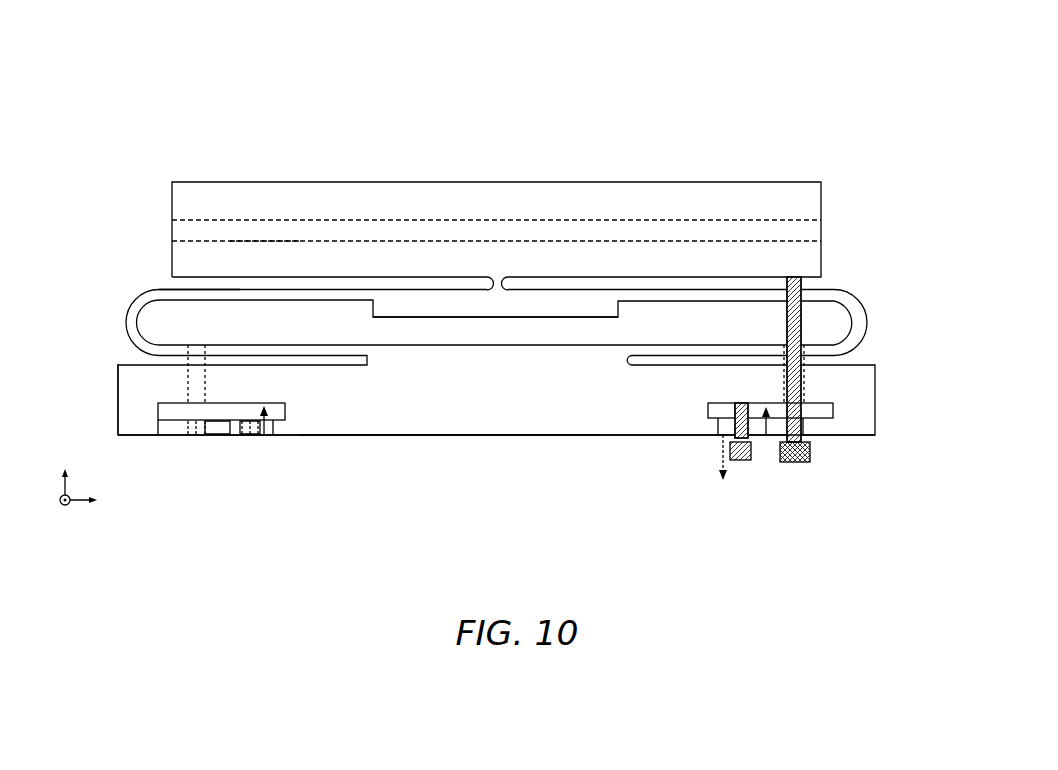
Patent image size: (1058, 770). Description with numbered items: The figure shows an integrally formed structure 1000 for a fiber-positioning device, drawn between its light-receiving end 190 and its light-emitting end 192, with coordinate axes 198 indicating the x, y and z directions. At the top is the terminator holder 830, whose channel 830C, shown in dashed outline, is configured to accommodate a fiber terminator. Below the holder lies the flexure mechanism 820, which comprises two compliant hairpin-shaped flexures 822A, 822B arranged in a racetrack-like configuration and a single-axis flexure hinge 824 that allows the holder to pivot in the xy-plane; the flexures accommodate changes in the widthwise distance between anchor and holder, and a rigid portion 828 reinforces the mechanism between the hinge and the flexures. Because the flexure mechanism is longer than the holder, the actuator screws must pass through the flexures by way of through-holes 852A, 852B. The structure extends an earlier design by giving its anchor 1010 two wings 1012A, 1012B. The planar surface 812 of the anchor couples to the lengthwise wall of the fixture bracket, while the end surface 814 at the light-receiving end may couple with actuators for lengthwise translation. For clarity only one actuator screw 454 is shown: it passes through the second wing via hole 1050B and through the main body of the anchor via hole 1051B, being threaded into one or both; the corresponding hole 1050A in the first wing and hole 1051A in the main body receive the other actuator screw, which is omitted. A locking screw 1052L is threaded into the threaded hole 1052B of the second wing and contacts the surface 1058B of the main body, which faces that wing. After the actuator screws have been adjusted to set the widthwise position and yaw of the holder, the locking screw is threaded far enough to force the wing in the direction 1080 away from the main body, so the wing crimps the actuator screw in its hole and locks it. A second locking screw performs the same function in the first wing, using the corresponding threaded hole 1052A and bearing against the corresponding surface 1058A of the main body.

The integrally formed structure 1000 is at (148, 52).
The light-receiving end 190 is at (68, 214).
The light-emitting end 192 is at (881, 216).
The coordinate system 198 is at (66, 523).
The terminator holder 830 is at (482, 206).
The channel 830C is at (285, 220).
The single-axis flexure hinge 824 is at (490, 284).
The rigid portion 828 is at (620, 310).
The flexure mechanism 820 is at (98, 332).
The compliant hairpin-shaped flexure 822A is at (125, 322).
The compliant hairpin-shaped flexure 822B is at (868, 321).
The through-hole 852A is at (197, 290).
The through-hole 852B is at (834, 289).
The actuator screw 454 is at (813, 455).
The anchor 1010 is at (477, 422).
The planar surface 812 is at (547, 443).
The end surface 814 is at (112, 417).
The hole 1050A is at (190, 436).
The hole 1050B is at (803, 428).
The hole 1051A is at (196, 383).
The hole 1051B is at (782, 384).
The first contact 1052A is at (250, 436).
The threaded hole 1052B is at (733, 428).
The locking screw 1052L is at (741, 463).
The wing 1012A is at (217, 436).
The wing 1012B is at (778, 463).
The first signal direction 1058A is at (265, 436).
The surface 1058B is at (765, 436).
The direction 1080 is at (720, 452).